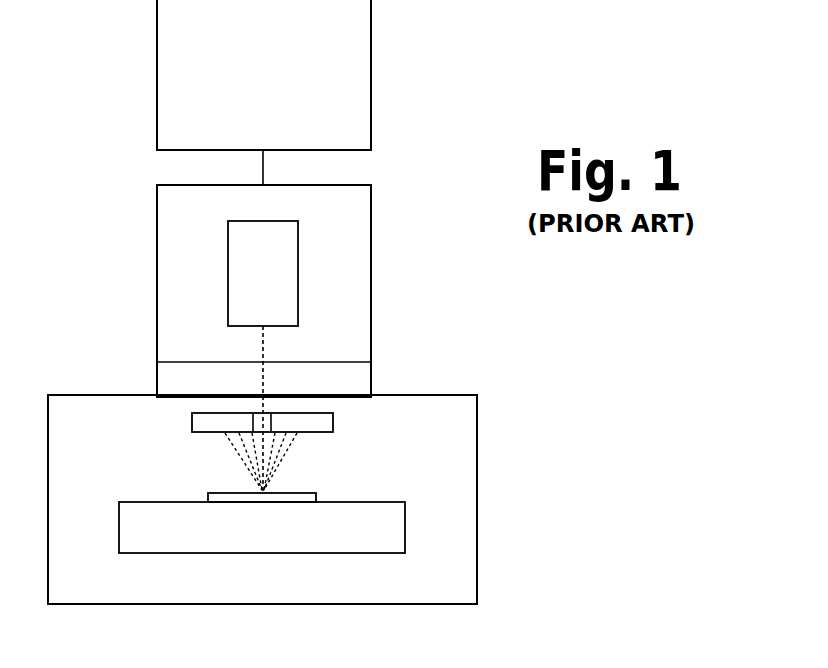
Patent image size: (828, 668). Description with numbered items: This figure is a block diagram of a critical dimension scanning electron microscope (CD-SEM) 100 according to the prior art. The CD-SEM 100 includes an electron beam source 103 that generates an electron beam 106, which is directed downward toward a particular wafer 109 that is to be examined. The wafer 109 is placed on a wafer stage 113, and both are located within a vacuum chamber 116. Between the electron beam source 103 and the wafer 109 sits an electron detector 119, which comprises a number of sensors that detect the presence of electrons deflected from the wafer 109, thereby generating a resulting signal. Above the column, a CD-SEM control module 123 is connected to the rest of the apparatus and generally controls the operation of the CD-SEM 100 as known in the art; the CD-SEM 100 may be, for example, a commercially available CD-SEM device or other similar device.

The critical dimension scanning electron microscope 100 is at (572, 369).
The electron beam source 103 is at (304, 276).
The electron beam 106 is at (269, 342).
The wafer 109 is at (216, 484).
The wafer stage 113 is at (396, 496).
The vacuum chamber 116 is at (482, 507).
The electron detector 119 is at (340, 424).
The CD-SEM control module 123 is at (285, 87).